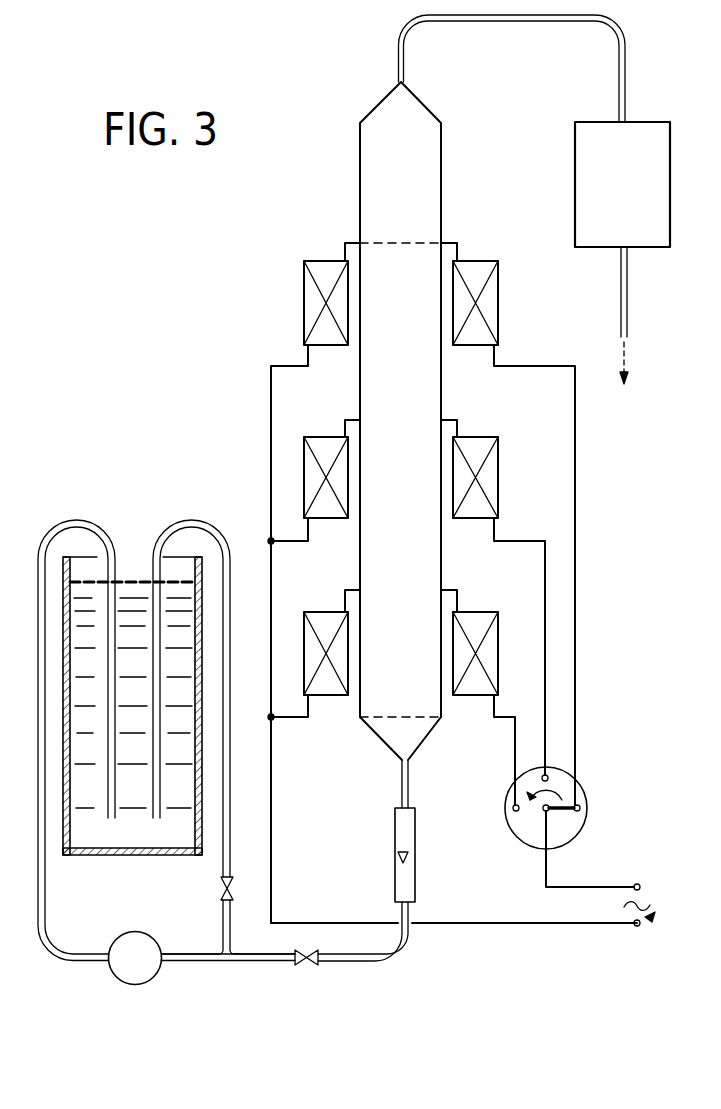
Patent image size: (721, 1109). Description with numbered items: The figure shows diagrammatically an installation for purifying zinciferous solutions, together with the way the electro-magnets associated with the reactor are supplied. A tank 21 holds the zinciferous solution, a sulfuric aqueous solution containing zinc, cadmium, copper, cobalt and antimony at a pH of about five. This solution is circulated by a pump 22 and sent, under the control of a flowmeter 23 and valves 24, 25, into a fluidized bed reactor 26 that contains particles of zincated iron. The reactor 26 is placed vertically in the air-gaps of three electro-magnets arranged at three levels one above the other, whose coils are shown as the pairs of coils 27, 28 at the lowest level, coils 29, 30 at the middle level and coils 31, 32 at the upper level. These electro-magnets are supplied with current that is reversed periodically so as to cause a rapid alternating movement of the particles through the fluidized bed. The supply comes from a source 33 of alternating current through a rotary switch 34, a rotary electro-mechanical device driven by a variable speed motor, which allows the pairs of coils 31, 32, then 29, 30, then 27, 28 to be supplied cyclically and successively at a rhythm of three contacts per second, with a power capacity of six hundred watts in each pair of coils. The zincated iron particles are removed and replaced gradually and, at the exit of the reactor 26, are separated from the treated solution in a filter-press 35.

The tank 21 is at (120, 853).
The pump 22 is at (137, 969).
The flowmeter 23 is at (395, 877).
The valve 24 is at (300, 966).
The valve 25 is at (221, 895).
The fluidized bed reactor 26 is at (415, 495).
The coil 27 is at (327, 684).
The coil 28 is at (471, 684).
The coil 29 is at (325, 447).
The coil 30 is at (492, 462).
The coil 31 is at (311, 305).
The coil 32 is at (487, 300).
The source 33 is at (650, 917).
The rotary switch 34 is at (584, 792).
The filter-press 35 is at (636, 199).